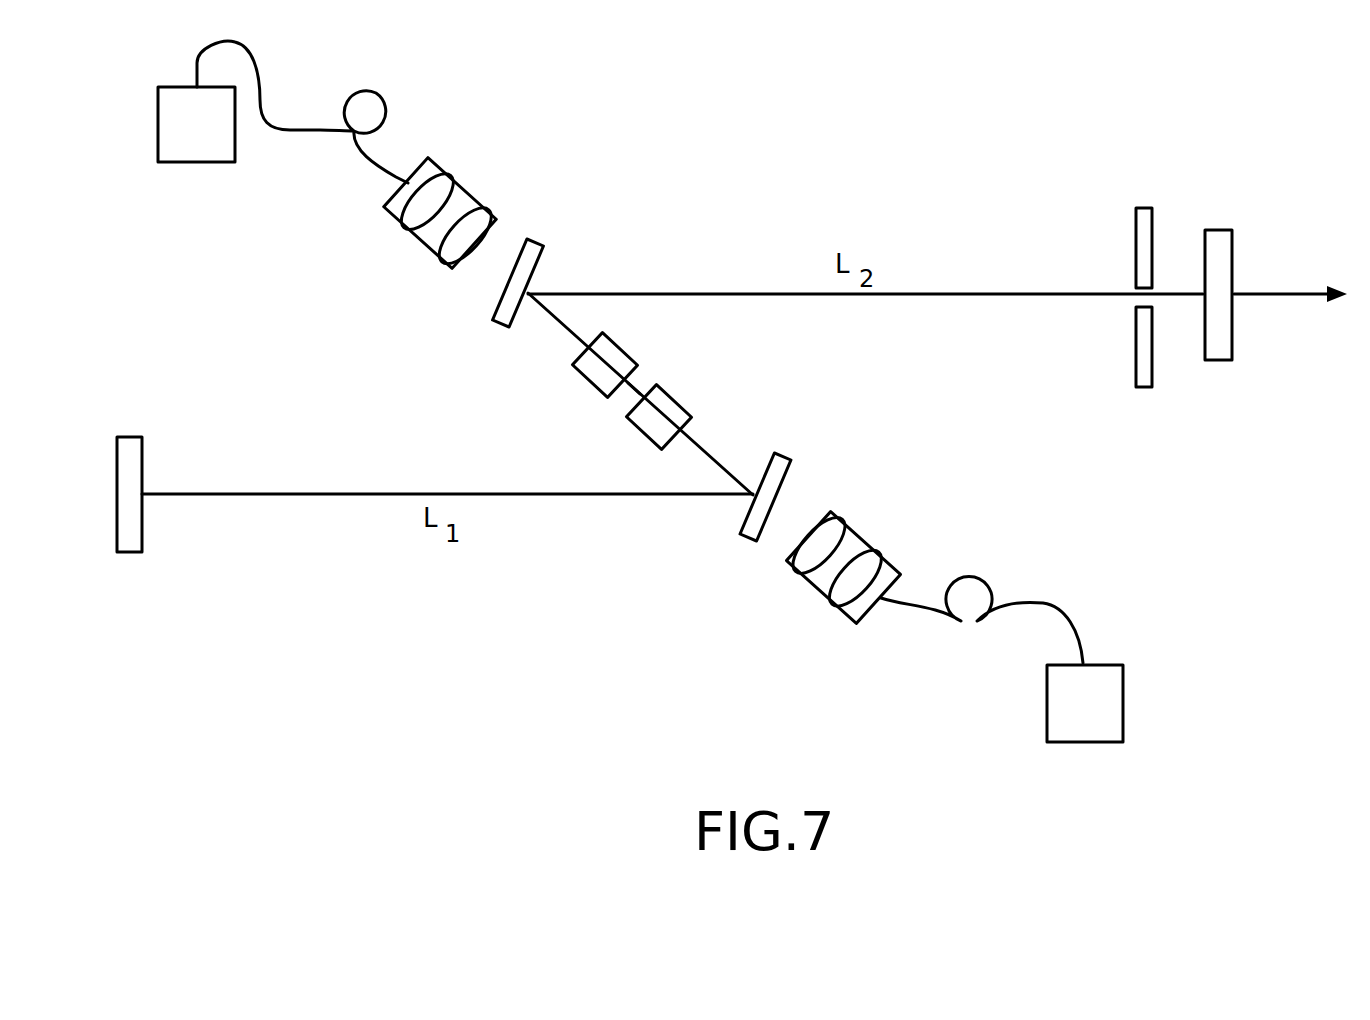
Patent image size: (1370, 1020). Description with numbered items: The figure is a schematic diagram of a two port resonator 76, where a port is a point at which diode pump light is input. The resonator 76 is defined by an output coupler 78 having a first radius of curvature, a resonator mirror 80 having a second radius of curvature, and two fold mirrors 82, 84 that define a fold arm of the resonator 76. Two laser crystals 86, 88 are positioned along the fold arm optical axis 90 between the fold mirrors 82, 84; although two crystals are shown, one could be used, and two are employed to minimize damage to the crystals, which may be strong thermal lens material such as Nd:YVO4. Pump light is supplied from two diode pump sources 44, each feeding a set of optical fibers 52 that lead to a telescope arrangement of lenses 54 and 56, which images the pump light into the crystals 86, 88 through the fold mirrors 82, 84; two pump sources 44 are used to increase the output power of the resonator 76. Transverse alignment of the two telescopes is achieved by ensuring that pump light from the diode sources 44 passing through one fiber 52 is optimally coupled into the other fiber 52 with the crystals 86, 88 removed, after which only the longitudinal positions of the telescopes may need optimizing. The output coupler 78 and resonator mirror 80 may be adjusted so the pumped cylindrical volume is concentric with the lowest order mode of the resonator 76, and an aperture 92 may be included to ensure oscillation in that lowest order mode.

The diode pump source 44 is at (200, 162).
The optical fibers 52 is at (258, 82).
The lens 54 is at (446, 170).
The lens 56 is at (484, 208).
The two port resonator 76 is at (903, 294).
The output coupler 78 is at (1215, 230).
The resonator mirror 80 is at (119, 552).
The fold mirror 82 is at (498, 314).
The fold mirror 84 is at (792, 466).
The laser crystal 86 is at (625, 354).
The laser crystal 88 is at (679, 404).
The fold arm optical axis 90 is at (637, 388).
The aperture 92 is at (1142, 207).